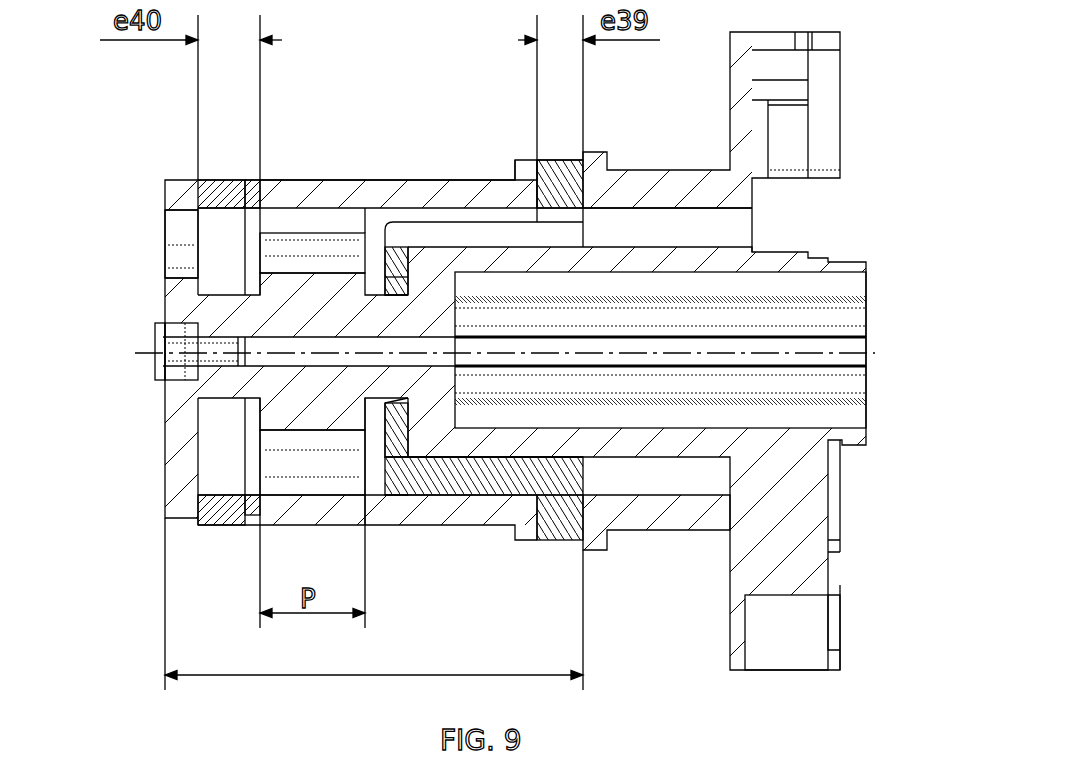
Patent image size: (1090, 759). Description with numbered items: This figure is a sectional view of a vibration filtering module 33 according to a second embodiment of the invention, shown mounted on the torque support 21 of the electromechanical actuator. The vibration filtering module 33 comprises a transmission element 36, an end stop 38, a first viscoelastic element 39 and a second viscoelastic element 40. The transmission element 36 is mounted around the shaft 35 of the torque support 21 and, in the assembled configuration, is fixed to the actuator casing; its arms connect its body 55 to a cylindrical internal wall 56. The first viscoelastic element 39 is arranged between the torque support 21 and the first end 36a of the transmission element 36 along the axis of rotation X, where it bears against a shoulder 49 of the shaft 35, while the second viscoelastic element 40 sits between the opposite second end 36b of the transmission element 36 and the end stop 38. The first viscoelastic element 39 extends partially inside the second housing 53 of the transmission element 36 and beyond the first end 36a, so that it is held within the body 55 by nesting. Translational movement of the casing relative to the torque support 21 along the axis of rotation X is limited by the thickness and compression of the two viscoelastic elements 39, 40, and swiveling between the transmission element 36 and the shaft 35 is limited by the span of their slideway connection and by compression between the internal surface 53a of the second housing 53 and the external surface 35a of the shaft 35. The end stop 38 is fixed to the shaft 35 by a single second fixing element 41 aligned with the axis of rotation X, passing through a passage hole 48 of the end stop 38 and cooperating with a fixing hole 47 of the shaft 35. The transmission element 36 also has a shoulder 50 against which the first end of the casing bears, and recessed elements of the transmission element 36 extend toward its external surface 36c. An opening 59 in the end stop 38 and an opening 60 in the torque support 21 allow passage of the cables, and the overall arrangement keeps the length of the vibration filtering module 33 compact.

The torque support 21 is at (798, 517).
The vibration filtering module 33 is at (308, 603).
The shaft 35 is at (425, 250).
The external surface 35a is at (456, 460).
The transmission element 36 is at (362, 193).
The first end 36a is at (535, 195).
The second end 36b is at (250, 196).
The external surface 36c is at (322, 180).
The end stop 38 is at (175, 440).
The first viscoelastic element 39 is at (550, 178).
The second viscoelastic element 40 is at (222, 192).
The second fixing element 41 is at (155, 360).
The fixing hole 47 is at (275, 360).
The passage hole 48 is at (183, 331).
The shoulder 49 is at (594, 547).
The shoulder 50 is at (528, 535).
The second housing 53 is at (470, 233).
The internal surface 53a is at (425, 497).
The body 55 is at (417, 513).
The internal wall 56 is at (262, 410).
The opening 59 is at (180, 232).
The opening 60 is at (706, 228).
The axis of rotation X is at (140, 352).